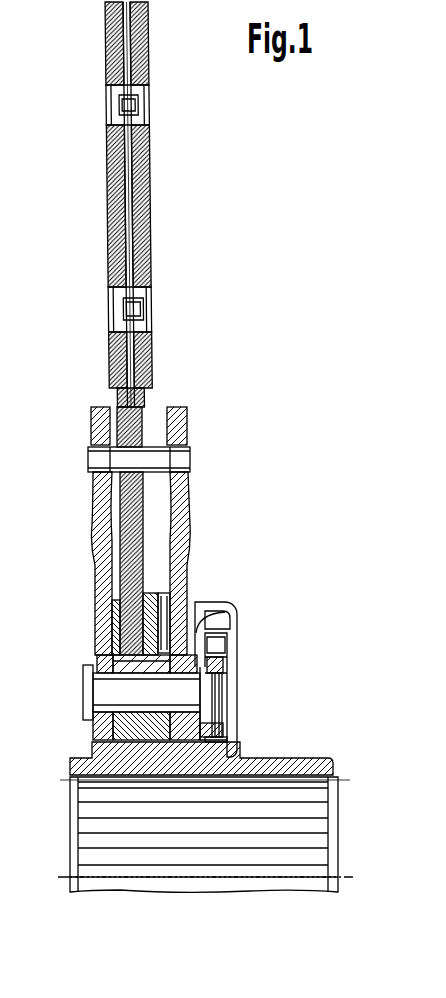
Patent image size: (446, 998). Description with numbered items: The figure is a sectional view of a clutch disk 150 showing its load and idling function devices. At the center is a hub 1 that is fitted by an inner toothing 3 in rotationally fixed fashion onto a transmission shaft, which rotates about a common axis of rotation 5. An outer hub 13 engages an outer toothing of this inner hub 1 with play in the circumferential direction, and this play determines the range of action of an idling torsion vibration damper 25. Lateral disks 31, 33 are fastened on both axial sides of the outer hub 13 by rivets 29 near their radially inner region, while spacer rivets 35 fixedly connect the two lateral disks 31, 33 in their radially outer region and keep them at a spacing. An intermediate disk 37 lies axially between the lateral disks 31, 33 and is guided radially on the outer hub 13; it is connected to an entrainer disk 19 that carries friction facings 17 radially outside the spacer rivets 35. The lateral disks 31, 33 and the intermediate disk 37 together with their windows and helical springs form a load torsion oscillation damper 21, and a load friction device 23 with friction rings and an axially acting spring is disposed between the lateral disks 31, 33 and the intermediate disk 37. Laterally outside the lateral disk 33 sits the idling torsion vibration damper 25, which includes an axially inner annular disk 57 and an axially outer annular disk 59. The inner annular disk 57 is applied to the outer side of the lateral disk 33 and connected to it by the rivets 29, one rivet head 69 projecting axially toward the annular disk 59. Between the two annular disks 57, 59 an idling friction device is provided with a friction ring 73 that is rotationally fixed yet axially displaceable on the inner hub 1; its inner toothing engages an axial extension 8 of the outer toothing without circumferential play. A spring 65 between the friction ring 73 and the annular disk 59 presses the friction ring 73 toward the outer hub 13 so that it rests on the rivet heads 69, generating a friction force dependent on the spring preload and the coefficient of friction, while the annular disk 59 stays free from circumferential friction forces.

The hub 1 is at (72, 770).
The inner toothing 3 is at (98, 834).
The axis of rotation 5 is at (105, 877).
The axial extension of the outer toothing 8 is at (213, 730).
The outer hub 13 is at (107, 643).
The friction facings 17 is at (147, 33).
The entrainer disk 19 is at (128, 160).
The load torsion oscillation damper 21 is at (208, 405).
The load friction device 23 is at (113, 598).
The idling torsion vibration damper 25 is at (247, 613).
The rivets 29 is at (110, 683).
The lateral disk 31 is at (97, 498).
The lateral disk 33 is at (175, 493).
The spacer rivets 35 is at (110, 443).
The intermediate disk 37 is at (140, 513).
The axially inner annular disk 57 is at (197, 730).
The axially outer annular disk 59 is at (224, 722).
The spring 65 is at (219, 701).
The rivet head 69 is at (216, 665).
The friction ring 73 is at (237, 646).
The clutch disk 150 is at (282, 210).